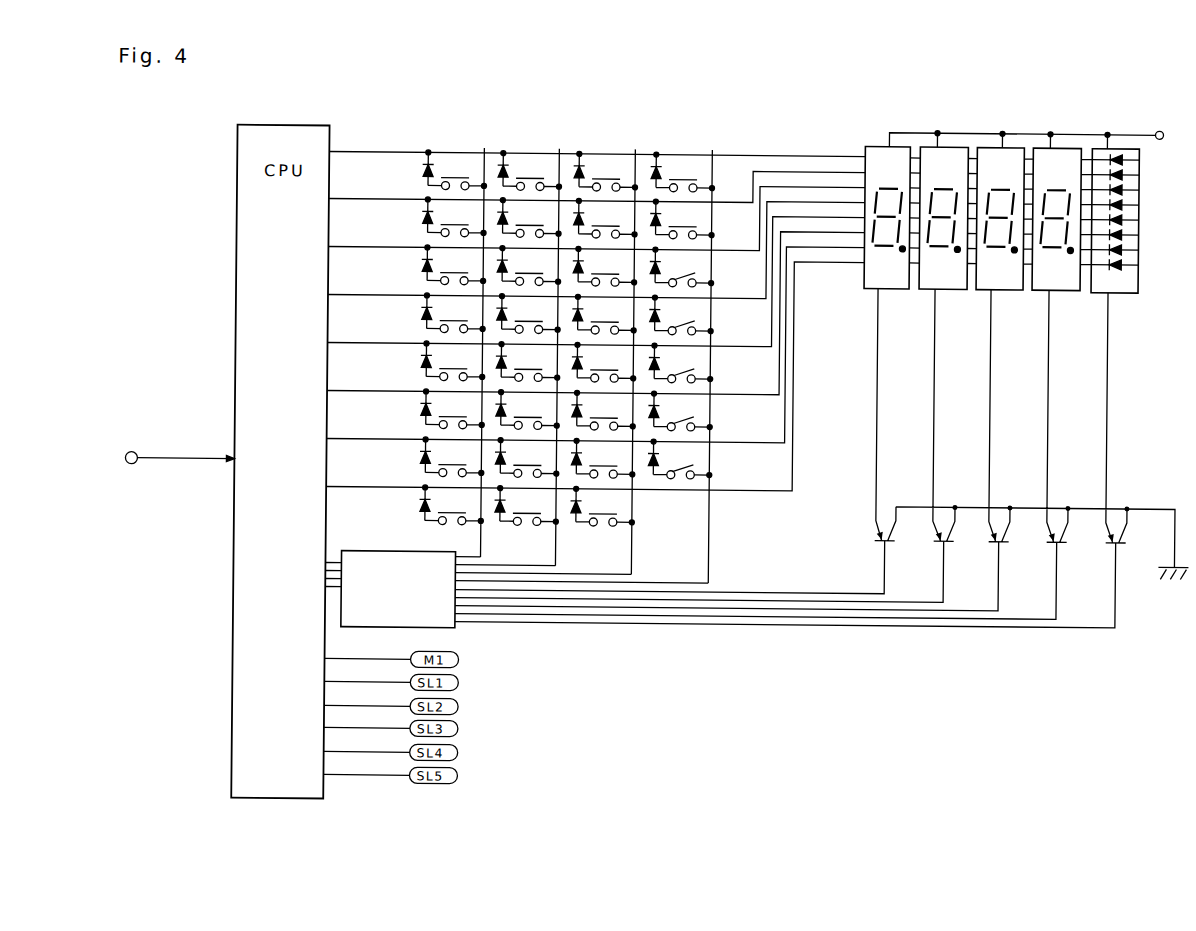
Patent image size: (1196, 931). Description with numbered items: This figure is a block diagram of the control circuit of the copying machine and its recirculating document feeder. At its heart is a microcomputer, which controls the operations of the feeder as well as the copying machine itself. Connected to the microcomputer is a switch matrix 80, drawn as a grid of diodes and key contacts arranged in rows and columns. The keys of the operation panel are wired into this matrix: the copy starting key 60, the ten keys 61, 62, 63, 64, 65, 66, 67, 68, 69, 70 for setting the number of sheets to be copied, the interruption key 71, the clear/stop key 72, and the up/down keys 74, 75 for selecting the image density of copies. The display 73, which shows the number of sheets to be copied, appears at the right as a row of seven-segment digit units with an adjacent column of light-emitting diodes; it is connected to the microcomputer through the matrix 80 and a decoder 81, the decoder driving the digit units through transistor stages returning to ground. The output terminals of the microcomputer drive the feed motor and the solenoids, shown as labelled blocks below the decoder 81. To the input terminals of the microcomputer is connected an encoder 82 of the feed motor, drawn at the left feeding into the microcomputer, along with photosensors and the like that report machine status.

The copy starting key 60 is at (454, 170).
The ten key 61 is at (454, 217).
The ten key 62 is at (454, 265).
The ten key 63 is at (453, 313).
The ten key 64 is at (453, 361).
The ten key 65 is at (452, 409).
The ten key 66 is at (452, 457).
The ten key 67 is at (451, 505).
The ten key 68 is at (529, 171).
The ten key 69 is at (529, 218).
The ten key 70 is at (529, 266).
The interruption key 71 is at (528, 314).
The clear/stop key 72 is at (528, 362).
The display 73 is at (906, 120).
The up/down key 74 is at (527, 410).
The up/down key 75 is at (527, 458).
The switch matrix 80 is at (604, 118).
The decoder 81 is at (399, 631).
The encoder 82 is at (176, 463).